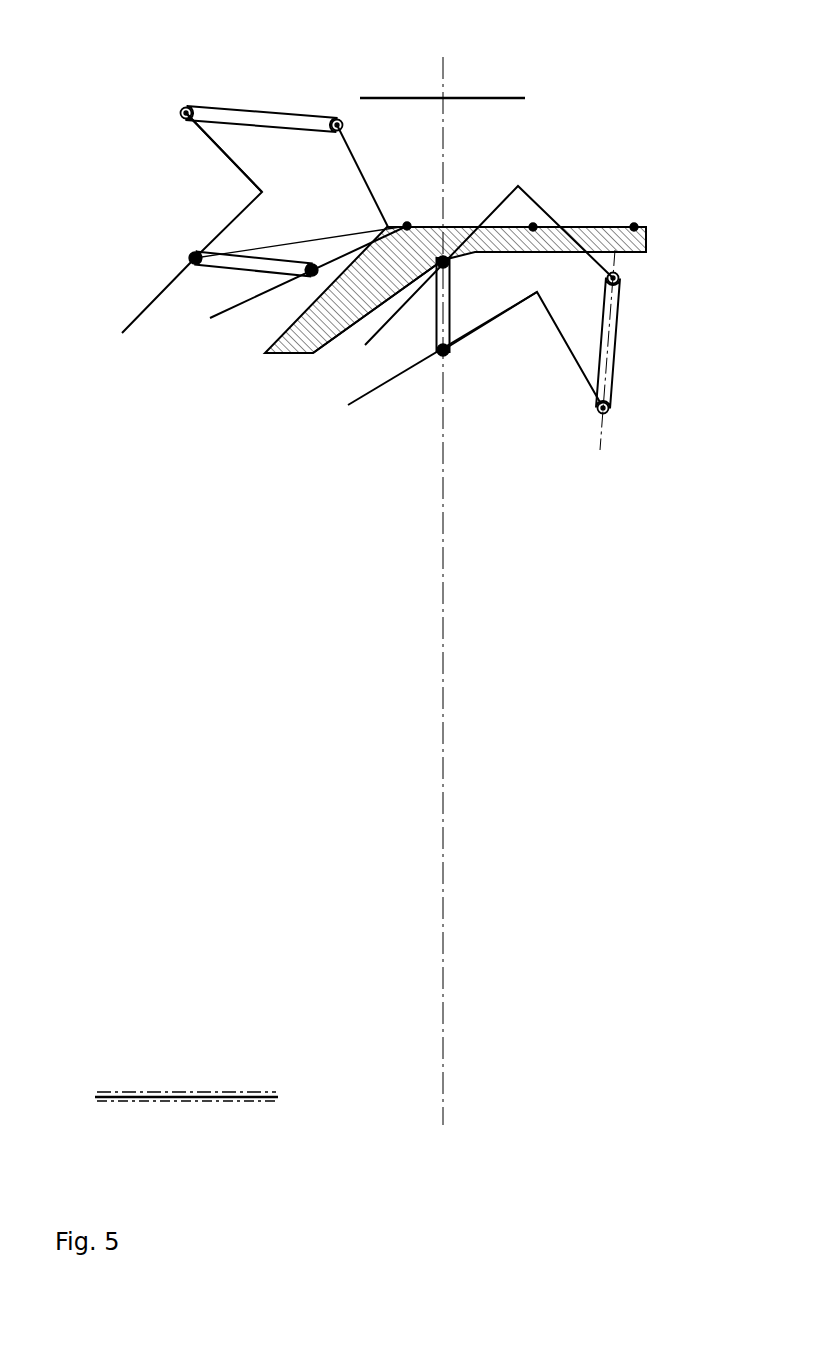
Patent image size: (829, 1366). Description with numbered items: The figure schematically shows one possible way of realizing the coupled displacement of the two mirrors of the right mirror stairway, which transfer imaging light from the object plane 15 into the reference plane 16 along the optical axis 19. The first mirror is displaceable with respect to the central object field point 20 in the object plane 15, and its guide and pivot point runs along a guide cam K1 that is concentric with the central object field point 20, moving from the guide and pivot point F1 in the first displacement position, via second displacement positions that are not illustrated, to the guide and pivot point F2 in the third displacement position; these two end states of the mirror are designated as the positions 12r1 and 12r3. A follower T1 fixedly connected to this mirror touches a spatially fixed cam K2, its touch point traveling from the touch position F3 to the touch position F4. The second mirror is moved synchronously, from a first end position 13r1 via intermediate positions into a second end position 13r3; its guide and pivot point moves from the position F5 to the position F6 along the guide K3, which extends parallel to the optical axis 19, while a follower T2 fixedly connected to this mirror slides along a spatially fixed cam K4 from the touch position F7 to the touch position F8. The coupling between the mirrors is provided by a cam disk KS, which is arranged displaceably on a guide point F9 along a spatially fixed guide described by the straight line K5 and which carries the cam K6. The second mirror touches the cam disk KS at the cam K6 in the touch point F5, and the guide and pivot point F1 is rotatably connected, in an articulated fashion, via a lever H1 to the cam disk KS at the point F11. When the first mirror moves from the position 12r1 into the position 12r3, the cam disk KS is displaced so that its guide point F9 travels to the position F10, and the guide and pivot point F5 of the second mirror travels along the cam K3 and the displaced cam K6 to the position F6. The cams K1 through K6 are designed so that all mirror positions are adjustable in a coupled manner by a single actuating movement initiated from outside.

The optical axis 19 is at (443, 1062).
The reference plane 16 is at (488, 97).
The object plane 15 is at (273, 1100).
The central object field point 20 is at (187, 1098).
The cam disk KS is at (290, 352).
The guide cam K1 is at (237, 267).
The spatially fixed cam K2 is at (220, 105).
The guide K3 is at (435, 325).
The spatially fixed cam K4 is at (617, 348).
The straight line of spatially fixed guide K5 is at (568, 226).
The cam K6 is at (330, 343).
The follower T1 is at (350, 163).
The follower T2 is at (570, 345).
The lever H1 is at (283, 243).
The first displacement position of mirror 12r 12r1 is at (138, 322).
The third displacement position of mirror 12r 12r3 is at (223, 317).
The first end position of mirror 13r 13r1 is at (512, 312).
The second end position of mirror 13r 13r3 is at (388, 327).
The guide and pivot point F1 is at (183, 248).
The guide and pivot point F2 is at (310, 285).
The touch position F3 is at (184, 100).
The touch position F4 is at (354, 127).
The guide and pivot point F5 is at (459, 275).
The guide and pivot point F6 is at (459, 359).
The touch position F7 is at (631, 282).
The touch position F8 is at (622, 410).
The guide point F9 is at (520, 216).
The guide point position F10 is at (641, 215).
The articulation point F11 is at (409, 214).